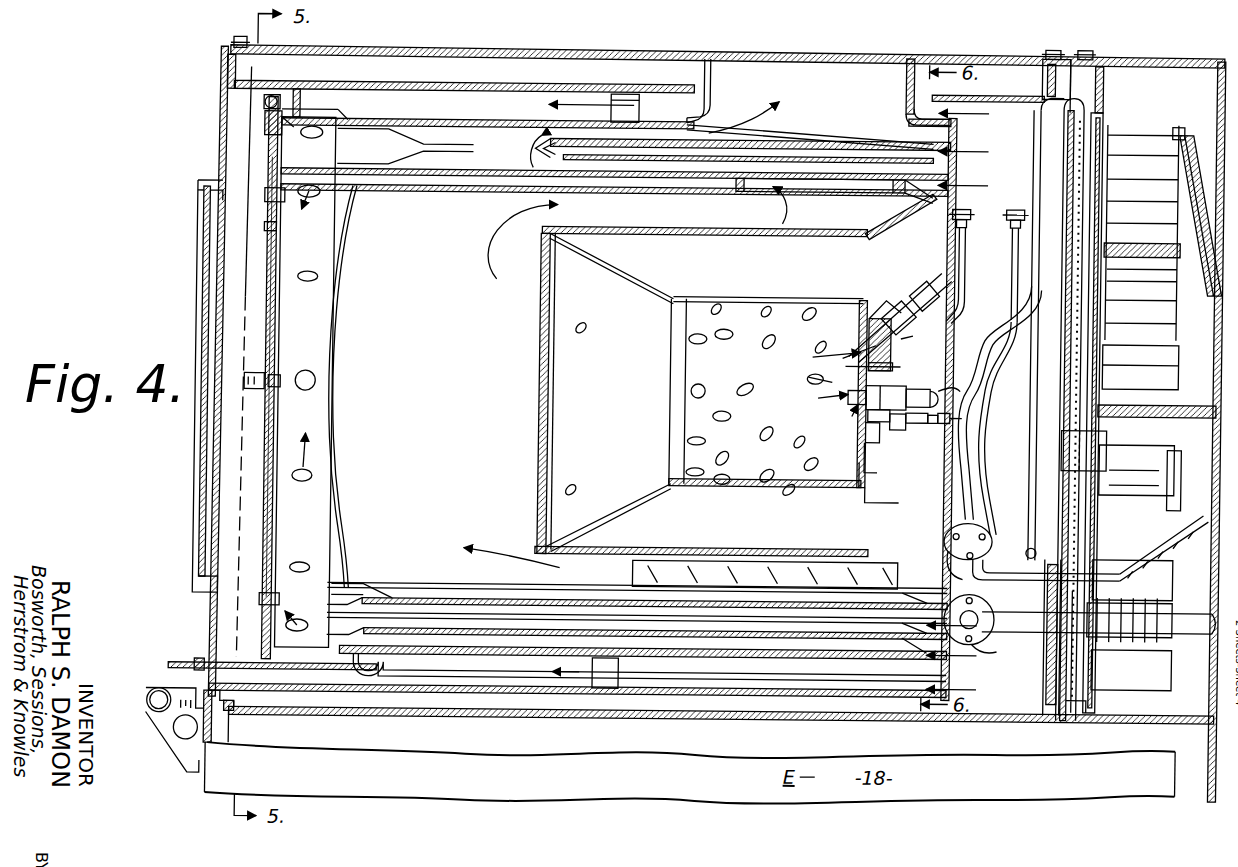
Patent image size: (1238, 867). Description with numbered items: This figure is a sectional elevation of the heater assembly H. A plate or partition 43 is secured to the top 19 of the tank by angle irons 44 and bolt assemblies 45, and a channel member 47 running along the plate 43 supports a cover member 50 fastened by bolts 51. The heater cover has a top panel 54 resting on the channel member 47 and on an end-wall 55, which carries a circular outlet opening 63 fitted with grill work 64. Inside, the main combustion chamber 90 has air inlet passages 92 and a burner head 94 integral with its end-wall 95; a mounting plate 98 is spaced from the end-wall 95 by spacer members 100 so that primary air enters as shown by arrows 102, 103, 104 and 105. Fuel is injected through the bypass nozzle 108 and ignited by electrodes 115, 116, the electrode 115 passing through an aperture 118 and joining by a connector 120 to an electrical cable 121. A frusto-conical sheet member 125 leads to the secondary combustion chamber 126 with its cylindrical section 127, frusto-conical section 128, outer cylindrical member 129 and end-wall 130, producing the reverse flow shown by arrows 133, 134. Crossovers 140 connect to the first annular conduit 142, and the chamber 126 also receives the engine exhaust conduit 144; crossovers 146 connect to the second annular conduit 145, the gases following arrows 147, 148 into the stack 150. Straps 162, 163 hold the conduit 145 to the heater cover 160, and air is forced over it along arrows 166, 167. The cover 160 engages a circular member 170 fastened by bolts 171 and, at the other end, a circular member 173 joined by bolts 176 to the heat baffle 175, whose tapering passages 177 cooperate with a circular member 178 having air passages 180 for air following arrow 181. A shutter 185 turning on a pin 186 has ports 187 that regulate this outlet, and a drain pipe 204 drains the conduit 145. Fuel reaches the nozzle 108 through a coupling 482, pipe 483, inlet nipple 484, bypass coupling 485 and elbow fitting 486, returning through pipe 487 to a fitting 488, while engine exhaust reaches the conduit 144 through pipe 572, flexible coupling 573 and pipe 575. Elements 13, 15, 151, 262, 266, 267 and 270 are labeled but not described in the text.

The bracket 13 is at (190, 766).
The roller 15 is at (155, 716).
The top of the tank 19 is at (688, 720).
The plate or partition 43 is at (1095, 94).
The angle irons 44 is at (1076, 704).
The bolt assemblies 45 is at (1042, 705).
The channel member 47 is at (1102, 70).
The cover member 50 is at (1192, 60).
The bolts 51 is at (231, 43).
The top panel 54 is at (612, 55).
The end-wall 55 is at (217, 105).
The circular outlet opening 63 is at (198, 202).
The grill work 64 is at (201, 278).
The main combustion chamber 90 is at (720, 485).
The air inlet passages 92 is at (690, 390).
The burner head 94 is at (875, 455).
The end-wall of main combustion chamber 95 is at (892, 288).
The mounting plate 98 is at (895, 354).
The spacer members 100 is at (887, 490).
The primary air arrow 102 is at (886, 300).
The primary air arrow 103 is at (872, 505).
The primary air arrow 104 is at (820, 398).
The primary air arrow 105 is at (843, 415).
The bypass type fuel injecting nozzle 108 is at (898, 384).
The electrode 115 is at (823, 357).
The electrode 116 is at (807, 376).
The aperture 118 is at (848, 342).
The connector 120 is at (942, 298).
The electrical cable 121 is at (1006, 261).
The frusto-conical sheet member 125 is at (620, 283).
The secondary combustion chamber 126 is at (635, 389).
The inwardly facing cylindrical section 127 is at (608, 228).
The frusto-conical section 128 is at (892, 230).
The outer cylindrical member 129 is at (512, 194).
The end-wall 130 is at (336, 372).
The flow arrow 133 is at (500, 283).
The flow arrow 134 is at (770, 209).
The crossover conduits 140 is at (852, 190).
The first annular heat exchanger conduit 142 is at (344, 172).
The gasoline engine exhaust conduit 144 is at (692, 572).
The second annular conduit 145 is at (472, 137).
The crossover members 146 is at (548, 144).
The flow arrow 147 is at (520, 150).
The flow arrow 148 is at (762, 124).
The stack 150 is at (725, 66).
The duct wall 151 is at (410, 121).
The heater assembly cover 160 is at (358, 84).
The circular strap 162 is at (636, 114).
The circular strap 163 is at (925, 106).
The air flow arrow 166 is at (985, 110).
The air flow arrow 167 is at (560, 104).
The circular member 170 is at (1088, 62).
The bolts 171 is at (1052, 90).
The circular metallic member 173 is at (226, 66).
The heat baffle member 175 is at (280, 280).
The bolts 176 is at (262, 107).
The radially tapering air passages 177 is at (268, 182).
The circular member 178 is at (338, 120).
The air passages 180 is at (307, 622).
The air flow arrow 181 is at (293, 540).
The rotatable shutter 185 is at (264, 445).
The pin 186 is at (277, 394).
The ports or passages 187 is at (266, 162).
The drain pipe 204 is at (172, 668).
The support 262 is at (1102, 431).
The heater element 266 is at (1078, 282).
The heater 267 is at (1183, 141).
The housing 270 is at (1128, 366).
The coupling 482 is at (1013, 206).
The pipe 483 is at (1020, 247).
The inlet nipple 484 is at (936, 401).
The by-pass type coupling 485 is at (905, 418).
The outlet elbow fitting 486 is at (940, 428).
The return flow pipe 487 is at (990, 334).
The fitting or coupling 488 is at (966, 198).
The pipe 572 is at (1196, 606).
The flexible coupling 573 is at (1140, 640).
The pipe 575 is at (1018, 630).
The heater assembly H is at (468, 84).